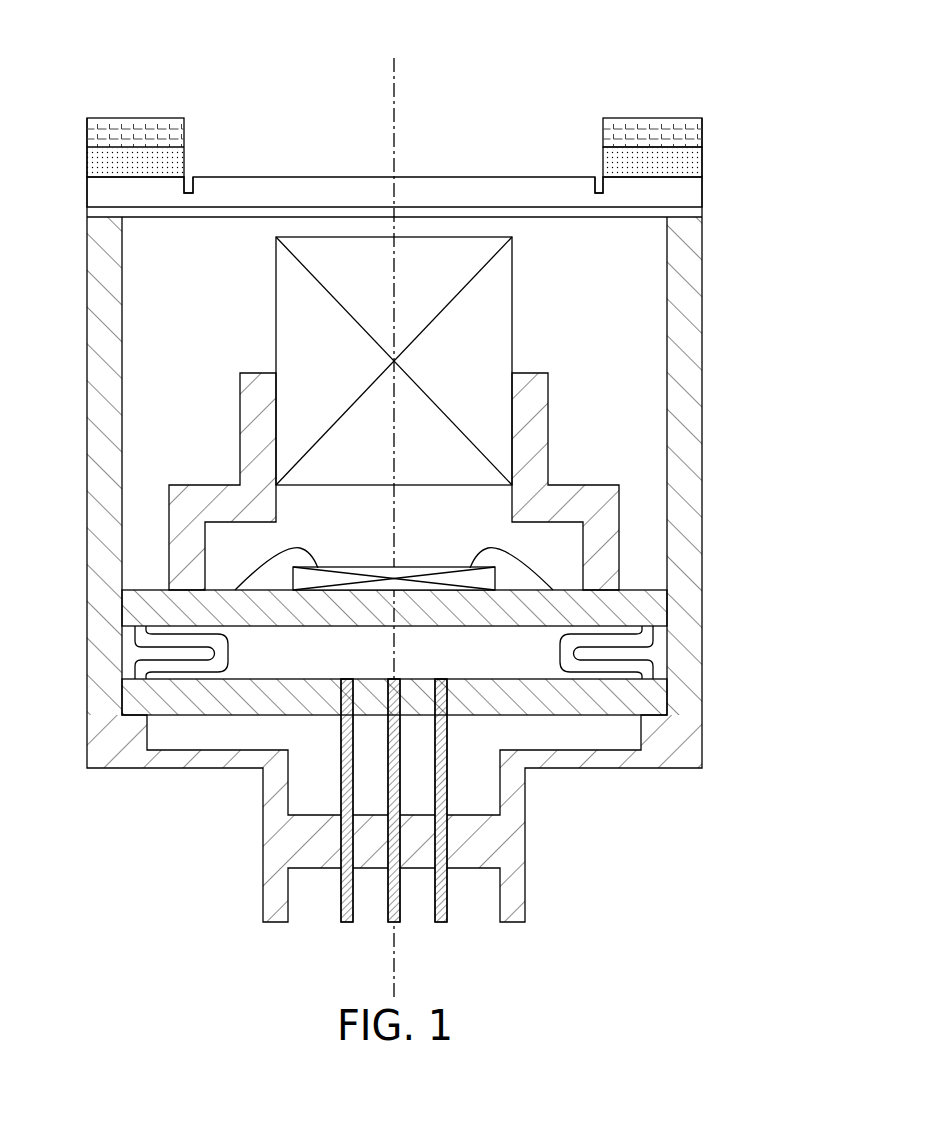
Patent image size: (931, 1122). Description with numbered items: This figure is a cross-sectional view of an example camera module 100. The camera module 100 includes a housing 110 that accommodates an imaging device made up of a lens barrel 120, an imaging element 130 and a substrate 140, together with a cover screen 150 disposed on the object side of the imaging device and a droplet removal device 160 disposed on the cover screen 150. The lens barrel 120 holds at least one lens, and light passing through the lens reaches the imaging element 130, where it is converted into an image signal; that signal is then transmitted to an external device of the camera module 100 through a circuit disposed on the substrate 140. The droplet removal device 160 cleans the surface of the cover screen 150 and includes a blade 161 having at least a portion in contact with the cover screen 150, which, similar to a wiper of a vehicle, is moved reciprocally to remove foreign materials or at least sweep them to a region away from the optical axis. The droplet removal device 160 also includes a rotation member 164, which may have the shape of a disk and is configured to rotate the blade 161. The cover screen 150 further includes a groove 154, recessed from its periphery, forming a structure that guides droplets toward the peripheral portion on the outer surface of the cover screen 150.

The camera module 100 is at (93, 53).
The housing 110 is at (690, 283).
The lens barrel 120 is at (413, 278).
The imaging element 130 is at (478, 581).
The substrate 140 is at (645, 610).
The cover screen 150 is at (328, 192).
The groove 154 is at (195, 160).
The droplet removal device 160 is at (436, 107).
The blade 161 is at (690, 163).
The rotation member 164 is at (690, 133).